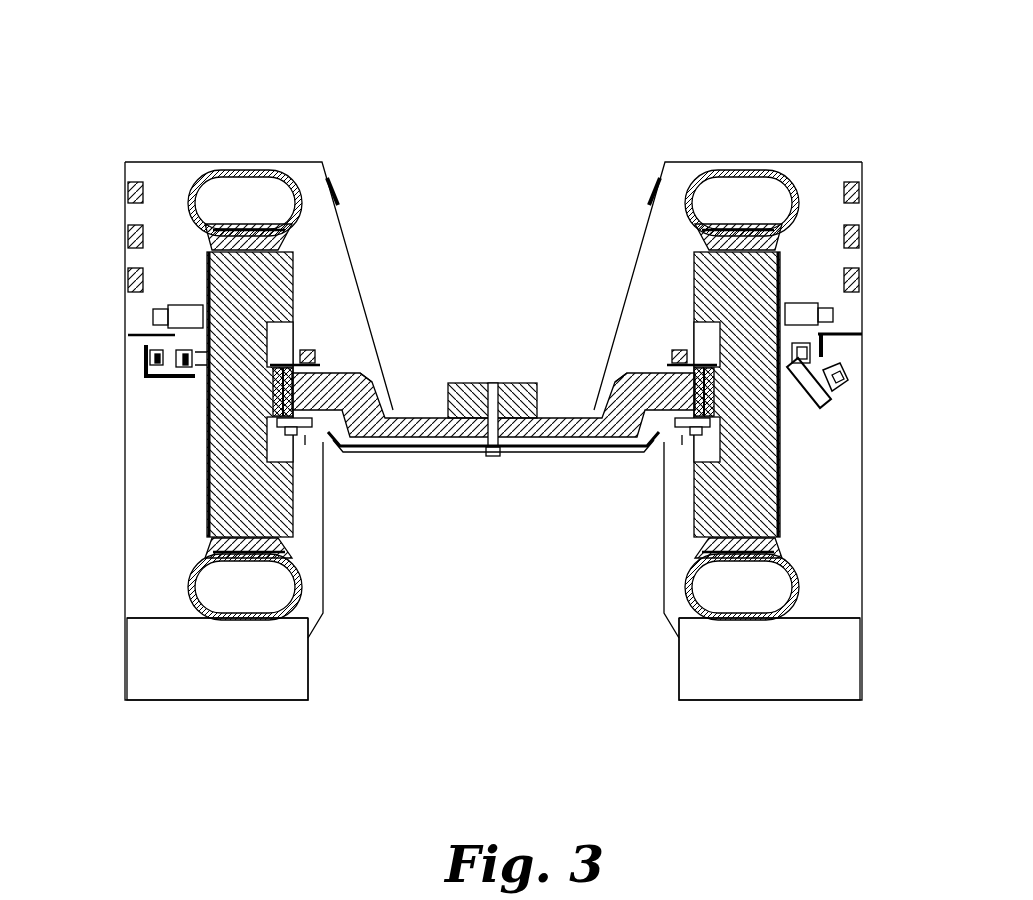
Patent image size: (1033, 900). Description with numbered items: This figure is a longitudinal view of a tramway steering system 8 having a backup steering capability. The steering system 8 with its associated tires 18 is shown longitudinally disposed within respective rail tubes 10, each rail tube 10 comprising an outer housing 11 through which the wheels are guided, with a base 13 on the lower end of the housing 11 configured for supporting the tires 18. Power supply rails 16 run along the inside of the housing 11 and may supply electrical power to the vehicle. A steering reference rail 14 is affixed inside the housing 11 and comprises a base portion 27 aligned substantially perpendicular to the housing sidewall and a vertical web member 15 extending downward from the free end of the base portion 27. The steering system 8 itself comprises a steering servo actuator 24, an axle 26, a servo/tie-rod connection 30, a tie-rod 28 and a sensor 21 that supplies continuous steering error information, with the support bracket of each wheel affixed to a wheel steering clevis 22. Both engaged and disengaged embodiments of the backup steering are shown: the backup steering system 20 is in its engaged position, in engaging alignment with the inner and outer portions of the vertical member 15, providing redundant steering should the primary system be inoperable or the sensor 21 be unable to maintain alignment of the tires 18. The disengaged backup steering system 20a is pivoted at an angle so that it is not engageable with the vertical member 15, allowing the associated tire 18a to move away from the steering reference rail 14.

The steering system 8 is at (507, 111).
The rail tube 10 is at (247, 142).
The outer housing 11 is at (124, 470).
The base 13 is at (182, 622).
The steering reference rail 14 is at (122, 365).
The vertical web member 15 is at (849, 358).
The power supply rails 16 is at (158, 172).
The tire 18 is at (290, 160).
The tire 18a is at (700, 160).
The backup steering system 20 is at (169, 397).
The disengaged backup steering system 20a is at (822, 412).
The sensor 21 is at (146, 304).
The wheel steering clevis 22 is at (318, 368).
The steering servo actuator 24 is at (478, 376).
The axle 26 is at (362, 373).
The base portion 27 is at (848, 333).
The tie-rod 28 is at (330, 437).
The servo/tie-rod connection 30 is at (500, 466).